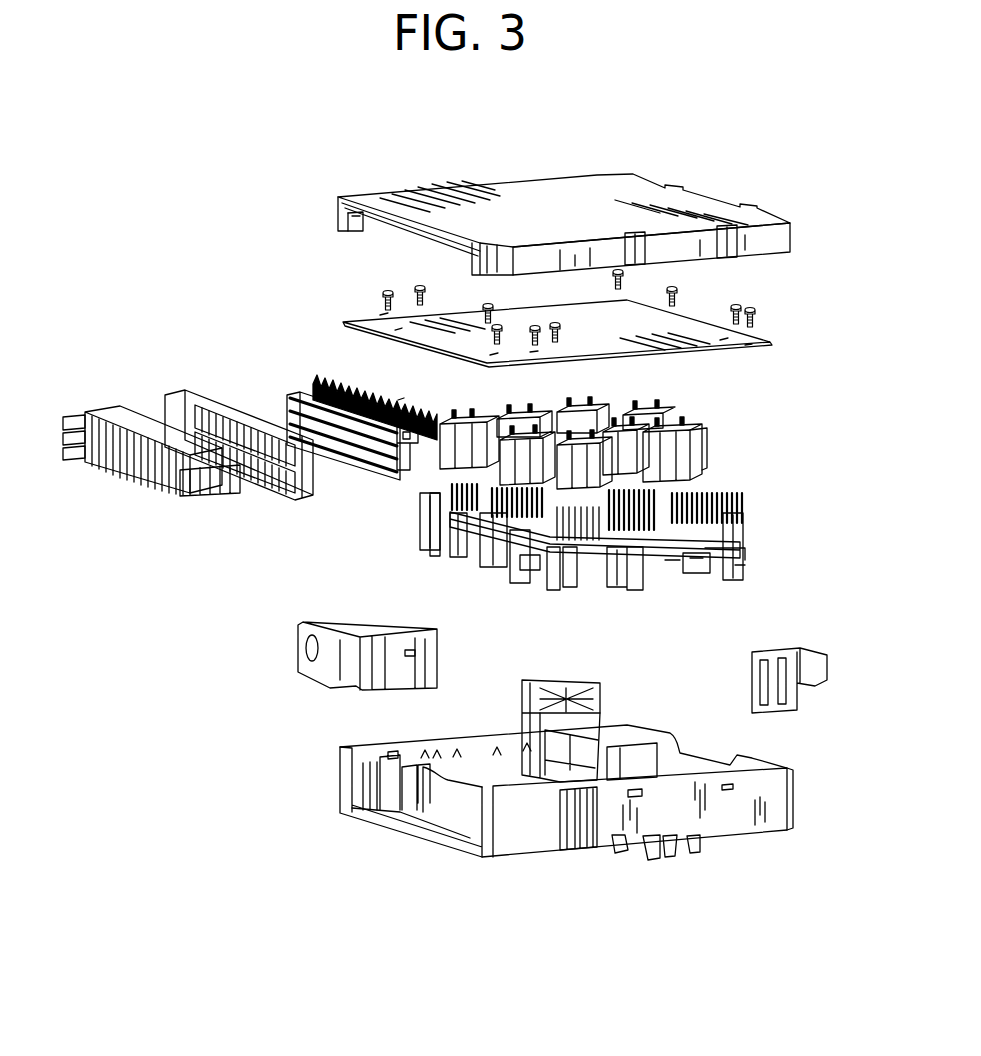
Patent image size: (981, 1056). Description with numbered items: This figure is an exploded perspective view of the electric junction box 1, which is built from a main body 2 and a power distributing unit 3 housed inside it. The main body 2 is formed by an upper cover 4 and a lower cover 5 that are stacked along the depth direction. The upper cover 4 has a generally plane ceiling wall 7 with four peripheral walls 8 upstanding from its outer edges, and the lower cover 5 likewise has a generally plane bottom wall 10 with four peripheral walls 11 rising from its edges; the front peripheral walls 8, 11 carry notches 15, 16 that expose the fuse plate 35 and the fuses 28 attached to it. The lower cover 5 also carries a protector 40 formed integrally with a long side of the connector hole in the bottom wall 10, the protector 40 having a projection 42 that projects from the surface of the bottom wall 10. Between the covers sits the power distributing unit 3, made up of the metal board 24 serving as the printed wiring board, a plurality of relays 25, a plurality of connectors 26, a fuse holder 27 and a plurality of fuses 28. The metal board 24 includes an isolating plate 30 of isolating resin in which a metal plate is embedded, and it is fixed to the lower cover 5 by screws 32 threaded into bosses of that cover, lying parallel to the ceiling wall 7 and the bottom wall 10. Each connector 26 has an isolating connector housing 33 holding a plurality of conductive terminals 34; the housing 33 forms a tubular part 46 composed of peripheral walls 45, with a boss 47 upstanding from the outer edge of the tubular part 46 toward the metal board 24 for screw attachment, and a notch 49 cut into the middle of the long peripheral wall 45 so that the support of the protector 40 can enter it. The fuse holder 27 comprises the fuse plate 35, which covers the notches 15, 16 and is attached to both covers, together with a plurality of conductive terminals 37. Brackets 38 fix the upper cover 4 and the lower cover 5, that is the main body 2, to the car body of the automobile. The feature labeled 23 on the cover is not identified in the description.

The electric junction box 1 is at (287, 148).
The main body 2 is at (845, 177).
The power distributing unit 3 is at (340, 354).
The upper cover 4 is at (569, 198).
The lower cover 5 is at (790, 765).
The ceiling wall 7 is at (598, 186).
The peripheral walls 8 is at (345, 220).
The bottom wall 10 is at (533, 799).
The peripheral walls 11 is at (340, 771).
The notch 15 is at (462, 247).
The notch 16 is at (472, 762).
The corner portion 23 is at (500, 244).
The metal board 24 is at (752, 344).
The relays 25 is at (700, 470).
The connectors 26 is at (626, 554).
The fuse holder 27 is at (322, 506).
The fuses 28 is at (135, 418).
The isolating plate 30 is at (392, 470).
The screw 32 is at (422, 290).
The connector housing 33 is at (518, 590).
The conductive terminals 34 is at (450, 488).
The fuse plate 35 is at (287, 483).
The conductive terminals 37 is at (401, 399).
The brackets 38 is at (387, 690).
The protector 40 is at (690, 852).
The projection 42 is at (702, 845).
The peripheral walls 45 is at (743, 572).
The tubular part 46 is at (745, 562).
The boss 47 is at (617, 480).
The notch 49 is at (470, 572).